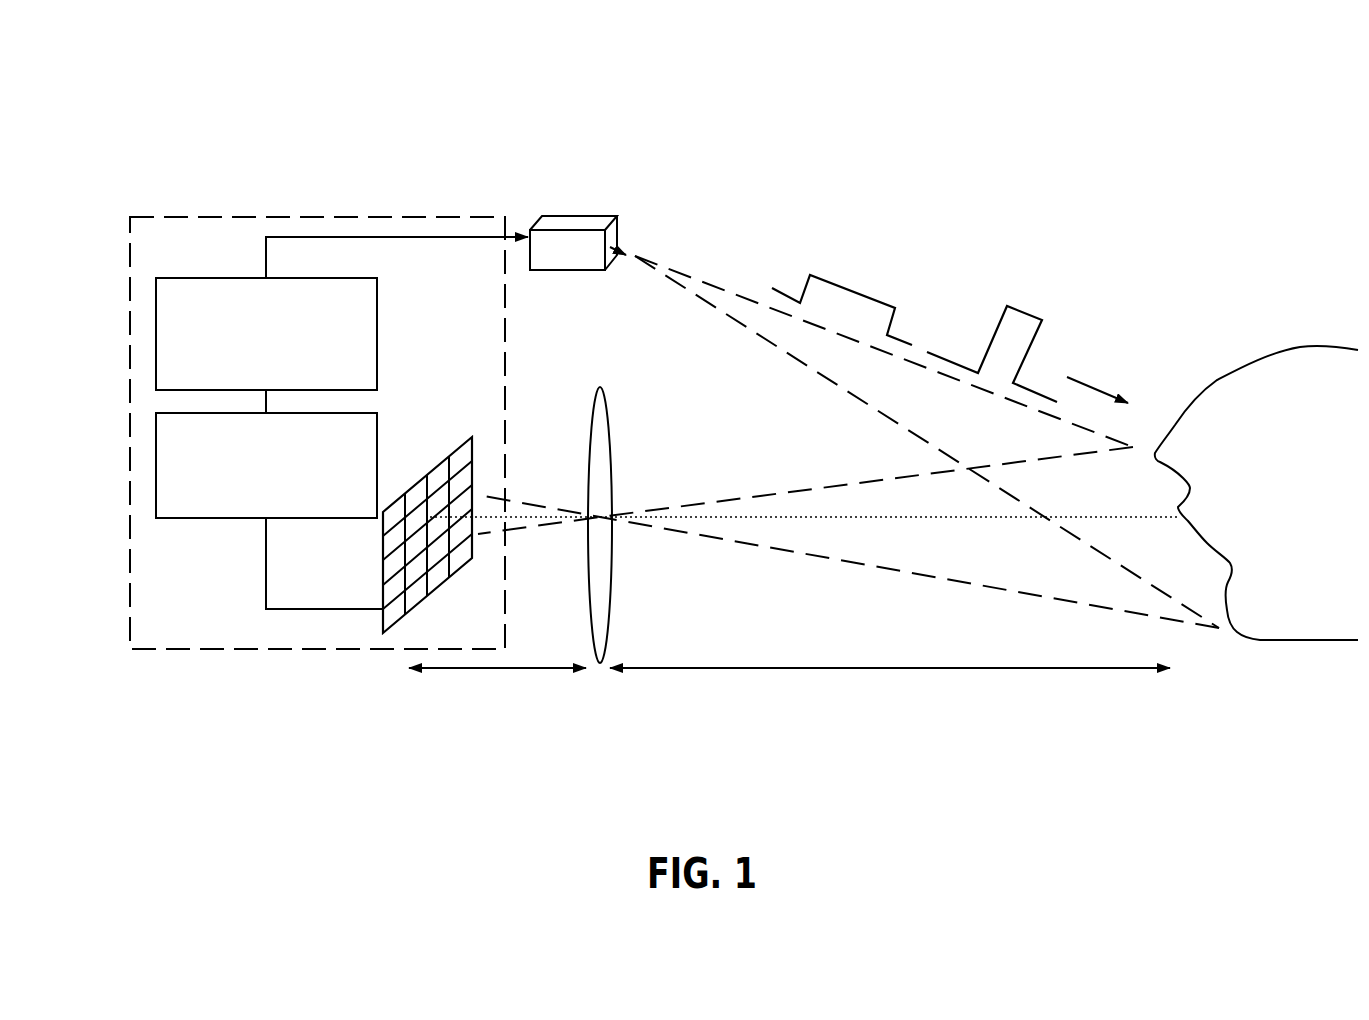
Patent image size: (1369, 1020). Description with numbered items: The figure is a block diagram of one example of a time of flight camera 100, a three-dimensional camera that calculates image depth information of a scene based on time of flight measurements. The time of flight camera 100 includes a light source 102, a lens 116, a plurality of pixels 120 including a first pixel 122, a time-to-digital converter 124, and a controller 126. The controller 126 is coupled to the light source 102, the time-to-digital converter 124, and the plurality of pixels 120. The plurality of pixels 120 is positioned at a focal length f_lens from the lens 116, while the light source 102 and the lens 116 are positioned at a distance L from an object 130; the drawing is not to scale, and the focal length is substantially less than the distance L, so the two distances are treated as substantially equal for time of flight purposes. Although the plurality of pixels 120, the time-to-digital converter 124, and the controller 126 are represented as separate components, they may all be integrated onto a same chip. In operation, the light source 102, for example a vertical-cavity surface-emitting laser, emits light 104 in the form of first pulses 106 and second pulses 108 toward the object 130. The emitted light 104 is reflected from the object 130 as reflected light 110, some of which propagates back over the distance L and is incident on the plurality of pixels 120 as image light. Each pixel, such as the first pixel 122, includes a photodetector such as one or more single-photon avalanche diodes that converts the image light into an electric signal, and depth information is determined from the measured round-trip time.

The time of flight camera 100 is at (152, 79).
The light source 102 is at (627, 220).
The emitted light 104 is at (914, 426).
The first pulses 106 is at (808, 281).
The second pulses 108 is at (996, 332).
The reflected light 110 is at (824, 537).
The lens 116 is at (594, 398).
The plurality of pixels 120 is at (439, 513).
The first pixel 122 is at (458, 434).
The time-to-digital converter 124 is at (235, 278).
The controller 126 is at (235, 518).
The object 130 is at (1258, 352).